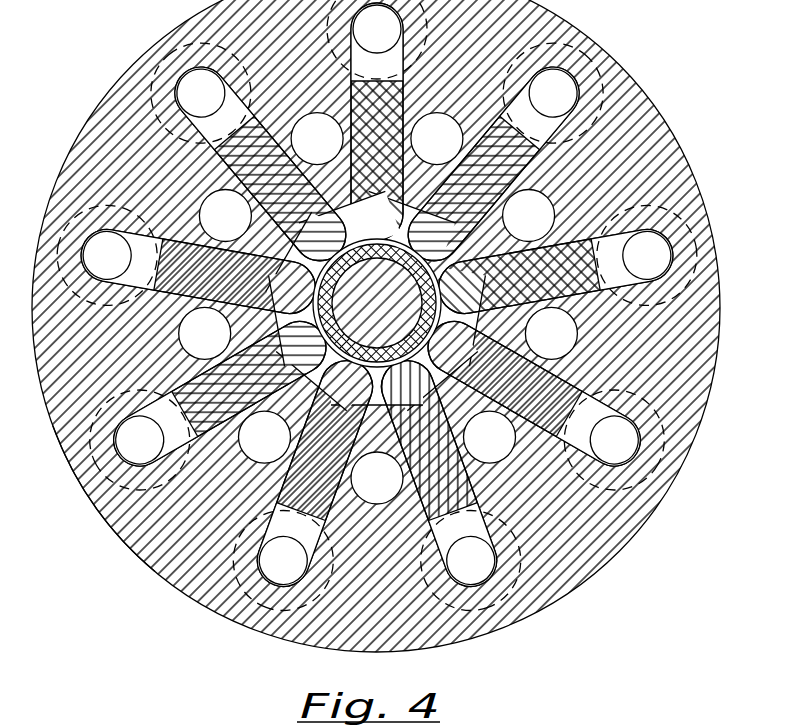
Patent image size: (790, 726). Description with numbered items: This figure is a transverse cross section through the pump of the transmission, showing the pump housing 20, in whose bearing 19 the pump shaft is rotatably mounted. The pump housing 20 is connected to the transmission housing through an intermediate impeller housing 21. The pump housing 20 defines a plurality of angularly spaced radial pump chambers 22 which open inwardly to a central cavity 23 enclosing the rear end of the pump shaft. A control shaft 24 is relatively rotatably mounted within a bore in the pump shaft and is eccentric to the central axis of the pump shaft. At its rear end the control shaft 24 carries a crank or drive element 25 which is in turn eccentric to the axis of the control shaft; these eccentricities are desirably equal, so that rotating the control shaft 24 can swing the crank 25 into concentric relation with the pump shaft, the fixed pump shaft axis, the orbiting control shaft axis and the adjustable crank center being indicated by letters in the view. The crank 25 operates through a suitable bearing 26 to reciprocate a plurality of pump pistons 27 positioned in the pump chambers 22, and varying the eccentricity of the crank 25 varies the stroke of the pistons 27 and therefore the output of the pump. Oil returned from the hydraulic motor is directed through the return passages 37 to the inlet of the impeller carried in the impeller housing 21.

The bearing 19 is at (410, 203).
The pump housing 20 is at (142, 48).
The intermediate impeller housing 21 is at (377, 303).
The radial pump chambers 22 is at (143, 270).
The central cavity 23 is at (335, 207).
The control shaft 24 is at (590, 240).
The crank or drive element 25 is at (277, 320).
The bearing 26 is at (282, 253).
The pump pistons 27 is at (233, 140).
The return passages 37 is at (148, 560).